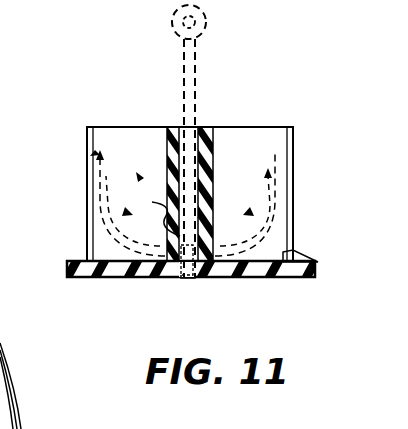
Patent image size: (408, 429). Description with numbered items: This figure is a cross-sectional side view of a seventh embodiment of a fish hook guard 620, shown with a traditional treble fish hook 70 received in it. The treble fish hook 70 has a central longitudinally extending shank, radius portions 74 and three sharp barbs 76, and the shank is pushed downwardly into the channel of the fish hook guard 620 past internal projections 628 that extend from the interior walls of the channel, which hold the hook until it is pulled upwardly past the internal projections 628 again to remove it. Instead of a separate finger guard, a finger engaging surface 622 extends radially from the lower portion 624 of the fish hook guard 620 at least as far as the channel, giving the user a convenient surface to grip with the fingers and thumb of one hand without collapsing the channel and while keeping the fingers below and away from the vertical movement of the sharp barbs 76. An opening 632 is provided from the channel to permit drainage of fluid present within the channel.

The treble fish hook 70 is at (198, 85).
The radius portions 74 is at (300, 242).
The sharp barbs 76 is at (90, 159).
The fish hook guard 620 is at (183, 283).
The finger engaging surface 622 is at (103, 281).
The lower portion 624 is at (290, 251).
The internal projections 628 is at (151, 204).
The opening 632 is at (191, 281).